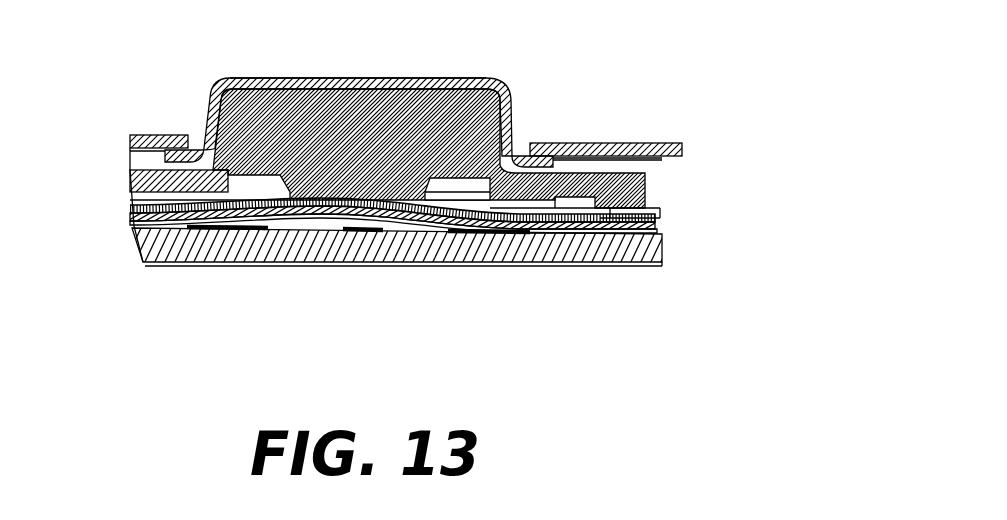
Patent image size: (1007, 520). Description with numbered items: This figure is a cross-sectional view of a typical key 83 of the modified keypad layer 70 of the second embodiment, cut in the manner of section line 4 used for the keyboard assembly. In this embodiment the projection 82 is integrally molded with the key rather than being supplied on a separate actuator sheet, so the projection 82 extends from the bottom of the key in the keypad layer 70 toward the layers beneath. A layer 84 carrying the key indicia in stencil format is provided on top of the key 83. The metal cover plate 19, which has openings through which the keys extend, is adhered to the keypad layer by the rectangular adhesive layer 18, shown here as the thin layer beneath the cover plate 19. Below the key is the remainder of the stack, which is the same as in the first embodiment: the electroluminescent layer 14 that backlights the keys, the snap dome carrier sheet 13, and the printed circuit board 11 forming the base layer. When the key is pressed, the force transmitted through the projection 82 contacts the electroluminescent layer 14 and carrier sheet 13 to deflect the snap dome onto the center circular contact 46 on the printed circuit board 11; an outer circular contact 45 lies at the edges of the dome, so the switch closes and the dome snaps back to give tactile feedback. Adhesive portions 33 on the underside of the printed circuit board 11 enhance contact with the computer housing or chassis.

The section line 4- 4 is at (435, 241).
The printed circuit board 11 is at (608, 250).
The right side portion of carrier layer 13 is at (653, 231).
The electroluminescent layer 14 is at (655, 222).
The adhesive layer 18 is at (663, 160).
The cover plate 19 is at (684, 149).
The adhesive portions 33 is at (535, 266).
The outer circular contact 45 is at (217, 235).
The center circular contact 46 is at (344, 236).
The modified keypad layer 70 is at (253, 120).
The projection 82 is at (380, 196).
The key 83 is at (405, 72).
The indicia layer 84 is at (468, 79).